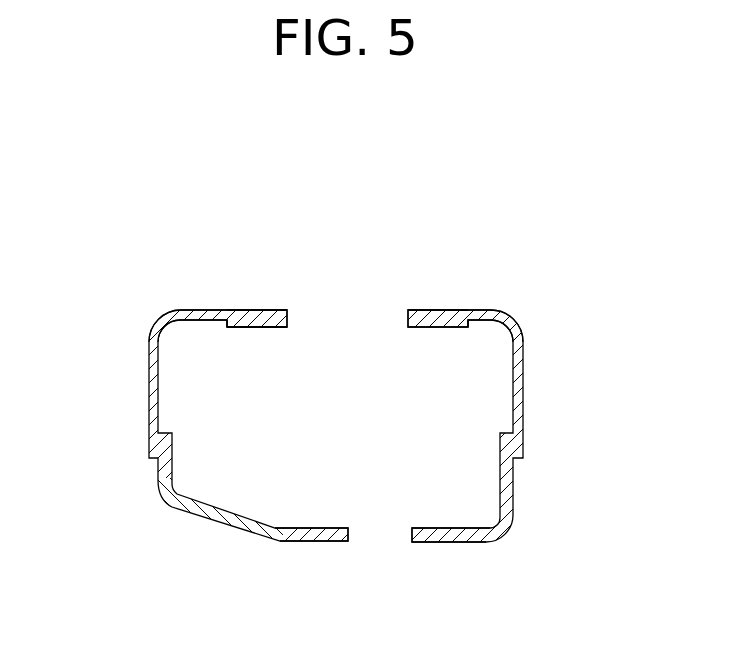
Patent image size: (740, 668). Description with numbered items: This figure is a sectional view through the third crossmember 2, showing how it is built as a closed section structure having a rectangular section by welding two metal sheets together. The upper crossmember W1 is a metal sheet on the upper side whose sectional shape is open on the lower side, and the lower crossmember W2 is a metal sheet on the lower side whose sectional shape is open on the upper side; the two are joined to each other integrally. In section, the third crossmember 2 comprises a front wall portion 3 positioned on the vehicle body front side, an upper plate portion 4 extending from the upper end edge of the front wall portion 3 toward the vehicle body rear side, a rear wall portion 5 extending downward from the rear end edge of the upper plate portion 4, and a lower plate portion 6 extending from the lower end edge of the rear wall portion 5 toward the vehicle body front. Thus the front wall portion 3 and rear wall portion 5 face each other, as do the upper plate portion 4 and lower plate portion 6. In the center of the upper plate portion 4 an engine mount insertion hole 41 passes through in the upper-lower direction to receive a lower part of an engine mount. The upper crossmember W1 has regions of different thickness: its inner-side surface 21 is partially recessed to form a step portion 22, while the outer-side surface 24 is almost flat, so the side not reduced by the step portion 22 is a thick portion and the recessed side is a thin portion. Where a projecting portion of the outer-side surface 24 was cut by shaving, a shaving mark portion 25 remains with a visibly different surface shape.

The third crossmember 2 is at (147, 196).
The front wall portion 3 is at (148, 393).
The upper plate portion 4 is at (237, 308).
The rear wall portion 5 is at (525, 372).
The lower plate portion 6 is at (305, 545).
The inner-side surface 21 is at (272, 328).
The step portion 22 is at (217, 328).
The outer-side surface 24 is at (270, 308).
The shaving mark portion 25 is at (198, 308).
The engine mount insertion hole 41 is at (408, 322).
The upper crossmember W1 is at (440, 309).
The lower crossmember W2 is at (452, 545).